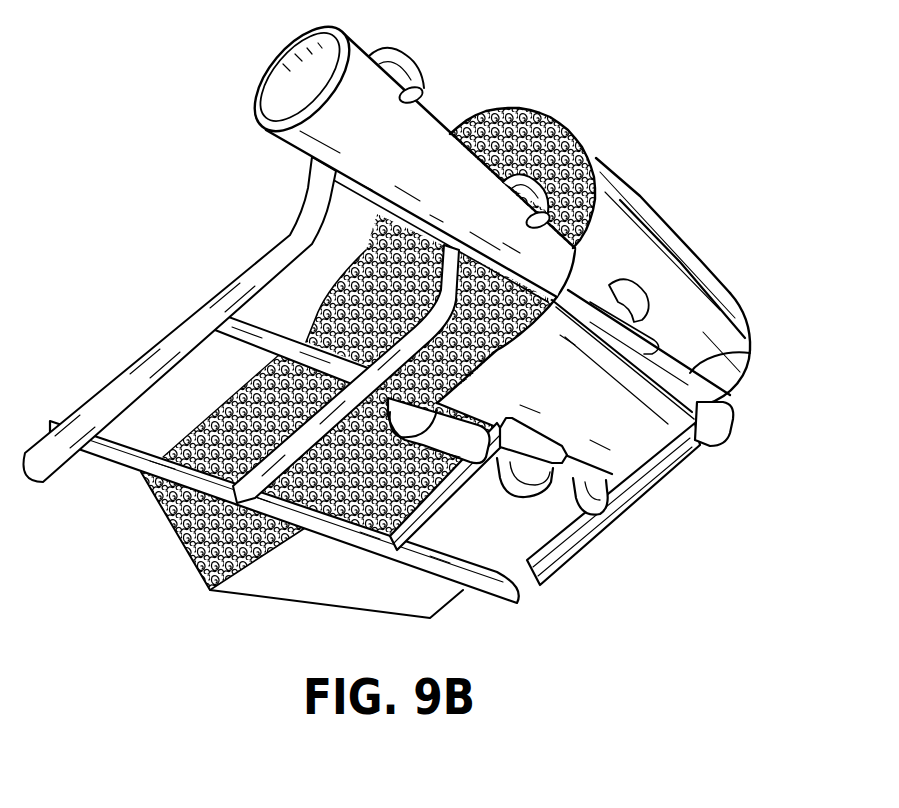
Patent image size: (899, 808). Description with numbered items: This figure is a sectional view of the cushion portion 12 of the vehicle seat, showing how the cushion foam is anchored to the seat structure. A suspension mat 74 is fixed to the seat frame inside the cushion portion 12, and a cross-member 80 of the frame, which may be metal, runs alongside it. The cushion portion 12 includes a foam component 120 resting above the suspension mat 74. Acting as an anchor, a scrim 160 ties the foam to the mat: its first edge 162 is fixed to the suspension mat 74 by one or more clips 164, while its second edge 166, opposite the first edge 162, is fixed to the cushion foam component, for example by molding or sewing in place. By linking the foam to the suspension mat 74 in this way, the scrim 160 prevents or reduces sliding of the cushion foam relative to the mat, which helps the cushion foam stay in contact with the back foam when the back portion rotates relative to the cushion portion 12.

The cushion portion 12 is at (411, 327).
The suspension mat 74 is at (496, 597).
The cross-member 80 is at (368, 188).
The foam component 120 is at (553, 139).
The scrim 160 is at (618, 331).
The first edge 162 is at (600, 512).
The clips 164 is at (428, 447).
The second edge 166 is at (750, 352).